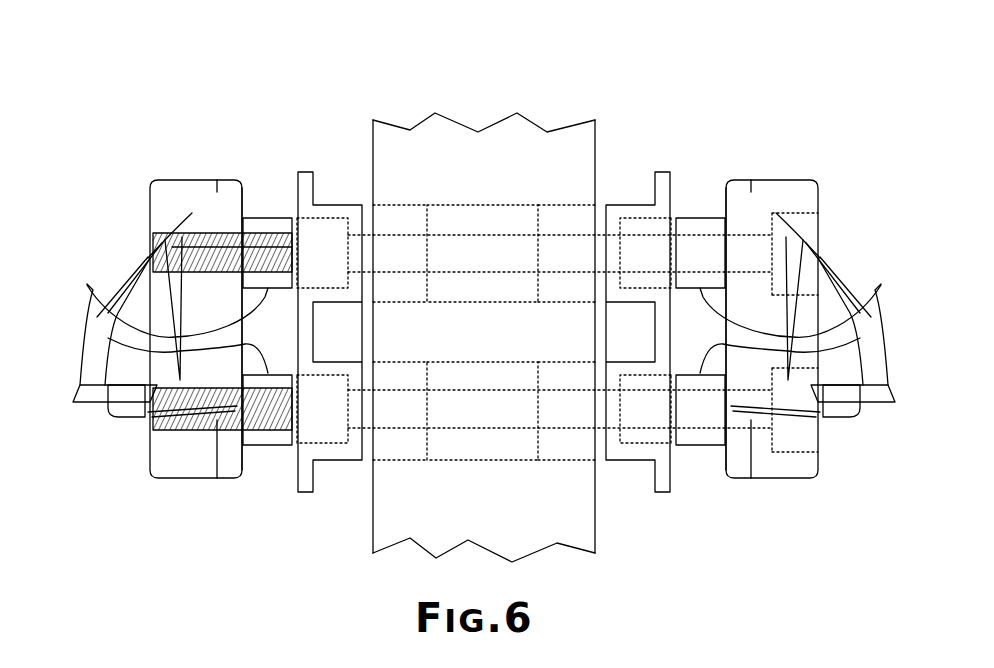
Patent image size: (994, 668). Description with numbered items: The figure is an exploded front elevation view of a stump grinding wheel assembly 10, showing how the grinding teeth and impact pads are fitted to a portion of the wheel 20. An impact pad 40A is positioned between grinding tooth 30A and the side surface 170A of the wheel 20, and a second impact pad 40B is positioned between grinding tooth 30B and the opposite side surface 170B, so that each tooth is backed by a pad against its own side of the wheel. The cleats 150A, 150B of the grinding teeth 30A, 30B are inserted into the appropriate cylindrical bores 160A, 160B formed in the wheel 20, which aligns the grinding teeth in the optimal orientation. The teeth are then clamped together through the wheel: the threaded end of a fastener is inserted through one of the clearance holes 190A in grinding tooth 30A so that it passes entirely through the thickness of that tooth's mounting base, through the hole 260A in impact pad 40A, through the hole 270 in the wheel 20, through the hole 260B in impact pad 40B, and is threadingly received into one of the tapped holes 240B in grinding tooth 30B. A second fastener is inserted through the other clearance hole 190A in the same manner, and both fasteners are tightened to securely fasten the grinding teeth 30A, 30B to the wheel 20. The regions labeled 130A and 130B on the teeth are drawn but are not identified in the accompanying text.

The stump grinding wheel assembly 10 is at (135, 131).
The wheel 20 is at (462, 155).
The grinding tooth 30A is at (798, 197).
The grinding tooth 30B is at (168, 190).
The impact pad 40A is at (664, 170).
The impact pad 40B is at (306, 172).
The mounting face A 130A is at (727, 195).
The mounting face B 130B is at (243, 195).
The cleat 150A is at (880, 290).
The cleat 150B is at (88, 290).
The cylindrical bore 160A is at (565, 217).
The cylindrical bore 160B is at (403, 217).
The side surface 170A is at (598, 134).
The side surface 170B is at (372, 134).
The clearance hole 190A is at (807, 243).
The tapped hole 240B is at (148, 258).
The hole 260A is at (616, 242).
The hole 260B is at (352, 242).
The hole 270 is at (470, 243).